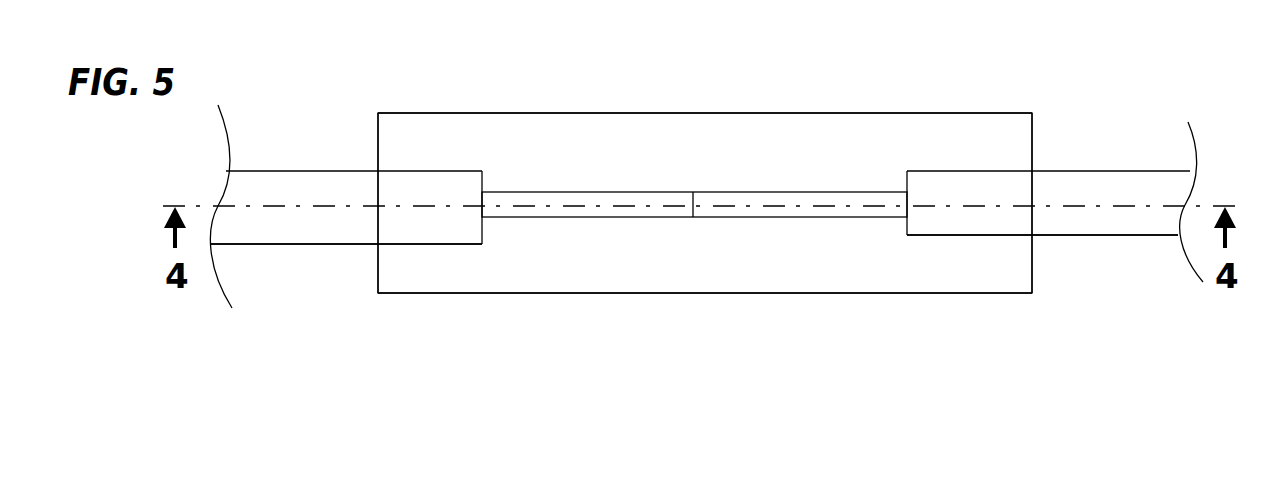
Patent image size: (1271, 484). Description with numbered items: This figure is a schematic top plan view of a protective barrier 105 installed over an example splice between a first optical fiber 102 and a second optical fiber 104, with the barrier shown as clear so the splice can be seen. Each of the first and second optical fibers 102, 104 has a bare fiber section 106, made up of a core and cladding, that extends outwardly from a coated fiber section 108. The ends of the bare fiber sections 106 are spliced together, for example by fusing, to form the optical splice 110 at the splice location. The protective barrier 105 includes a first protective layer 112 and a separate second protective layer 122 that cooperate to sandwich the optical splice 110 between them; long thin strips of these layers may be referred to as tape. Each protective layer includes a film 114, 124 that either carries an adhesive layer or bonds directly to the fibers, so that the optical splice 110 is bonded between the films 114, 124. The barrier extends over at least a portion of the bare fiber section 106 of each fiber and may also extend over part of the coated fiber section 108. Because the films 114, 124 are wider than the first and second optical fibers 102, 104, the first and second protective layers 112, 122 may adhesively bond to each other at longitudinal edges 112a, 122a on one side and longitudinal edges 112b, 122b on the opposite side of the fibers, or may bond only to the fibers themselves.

The first optical fiber 102 is at (277, 168).
The second optical fiber 104 is at (1118, 171).
The protective barrier 105 is at (1031, 111).
The bare fiber section 106 is at (548, 191).
The coated fiber section 108 is at (277, 244).
The optical splice 110 is at (697, 191).
The first protective layer 112 is at (705, 165).
The second protective layer 122 is at (909, 111).
The longitudinal edge of first protective layer 112a is at (705, 79).
The longitudinal edge of second protective layer 122a is at (628, 113).
The longitudinal edge of first protective layer 112b is at (705, 332).
The longitudinal edge of second protective layer 122b is at (590, 293).
The film 114 is at (401, 244).
The film 124 is at (422, 293).